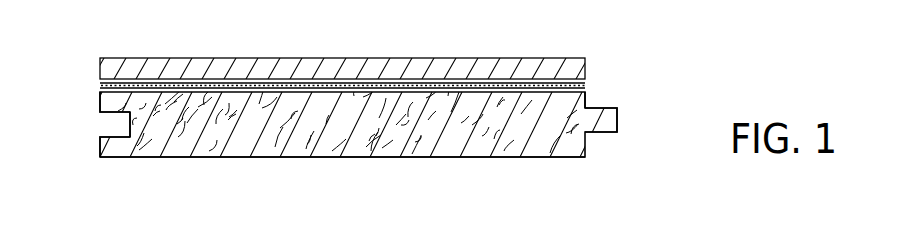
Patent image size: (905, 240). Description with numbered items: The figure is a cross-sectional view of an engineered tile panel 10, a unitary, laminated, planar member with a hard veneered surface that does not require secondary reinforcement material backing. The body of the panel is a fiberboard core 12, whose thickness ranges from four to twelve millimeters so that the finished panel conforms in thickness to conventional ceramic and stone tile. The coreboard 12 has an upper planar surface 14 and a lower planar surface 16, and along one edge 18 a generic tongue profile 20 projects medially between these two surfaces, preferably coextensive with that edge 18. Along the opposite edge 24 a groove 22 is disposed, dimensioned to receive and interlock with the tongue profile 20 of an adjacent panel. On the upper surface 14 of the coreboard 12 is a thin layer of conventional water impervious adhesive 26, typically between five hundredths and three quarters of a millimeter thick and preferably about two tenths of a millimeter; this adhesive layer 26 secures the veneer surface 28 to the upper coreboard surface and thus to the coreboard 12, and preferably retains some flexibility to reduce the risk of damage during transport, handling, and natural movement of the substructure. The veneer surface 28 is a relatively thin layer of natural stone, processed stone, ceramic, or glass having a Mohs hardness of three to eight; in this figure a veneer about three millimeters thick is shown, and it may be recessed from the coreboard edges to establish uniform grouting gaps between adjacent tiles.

The tile panel 10 is at (388, 161).
The fiberboard core 12 is at (258, 140).
The upper planar surface 14 is at (99, 108).
The lower planar surface 16 is at (142, 158).
The edge 18 is at (587, 102).
The tongue profile 20 is at (616, 135).
The groove 22 is at (108, 115).
The opposite edge 24 is at (100, 143).
The adhesive layer 26 is at (587, 83).
The veneer surface 28 is at (247, 58).